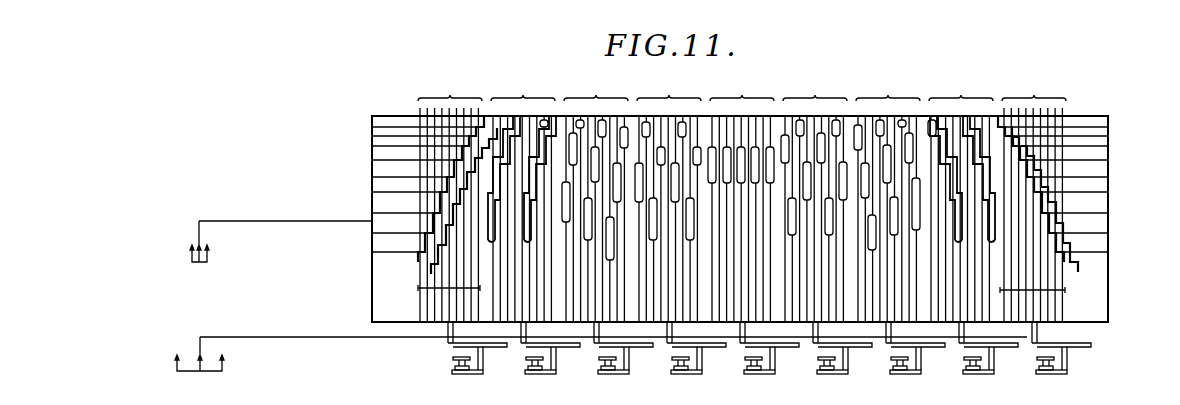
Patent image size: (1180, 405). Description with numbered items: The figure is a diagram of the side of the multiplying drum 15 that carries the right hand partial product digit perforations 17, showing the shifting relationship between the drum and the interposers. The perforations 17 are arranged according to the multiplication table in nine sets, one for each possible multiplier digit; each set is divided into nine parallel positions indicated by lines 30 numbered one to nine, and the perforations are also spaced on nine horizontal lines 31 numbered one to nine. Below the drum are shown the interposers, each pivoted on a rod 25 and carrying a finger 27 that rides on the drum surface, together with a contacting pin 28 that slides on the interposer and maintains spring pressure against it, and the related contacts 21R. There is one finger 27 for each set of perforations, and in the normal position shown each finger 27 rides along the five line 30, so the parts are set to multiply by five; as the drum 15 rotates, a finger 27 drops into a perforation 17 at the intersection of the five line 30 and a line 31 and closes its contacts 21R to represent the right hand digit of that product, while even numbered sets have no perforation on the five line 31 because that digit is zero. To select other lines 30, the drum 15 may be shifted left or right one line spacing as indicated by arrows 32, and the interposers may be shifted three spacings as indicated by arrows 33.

The multiplying drum 15 is at (1098, 152).
The perforations 17 is at (418, 235).
The contacts 21R is at (818, 360).
The rod 25 is at (868, 348).
The finger 27 is at (812, 340).
The contacting pin 28 is at (845, 355).
The parallel position lines 30 is at (448, 290).
The horizontal lines 31 is at (371, 192).
The arrows 32 is at (199, 243).
The arrows 33 is at (222, 352).